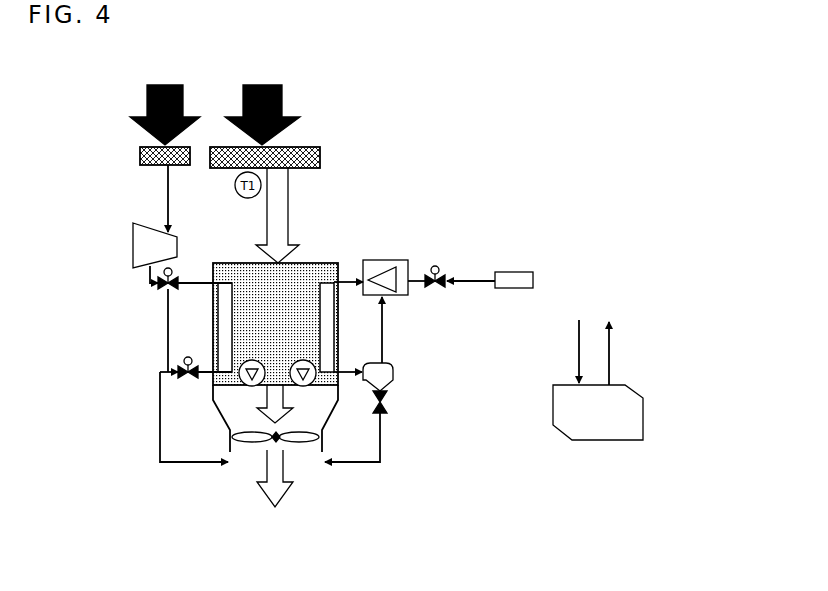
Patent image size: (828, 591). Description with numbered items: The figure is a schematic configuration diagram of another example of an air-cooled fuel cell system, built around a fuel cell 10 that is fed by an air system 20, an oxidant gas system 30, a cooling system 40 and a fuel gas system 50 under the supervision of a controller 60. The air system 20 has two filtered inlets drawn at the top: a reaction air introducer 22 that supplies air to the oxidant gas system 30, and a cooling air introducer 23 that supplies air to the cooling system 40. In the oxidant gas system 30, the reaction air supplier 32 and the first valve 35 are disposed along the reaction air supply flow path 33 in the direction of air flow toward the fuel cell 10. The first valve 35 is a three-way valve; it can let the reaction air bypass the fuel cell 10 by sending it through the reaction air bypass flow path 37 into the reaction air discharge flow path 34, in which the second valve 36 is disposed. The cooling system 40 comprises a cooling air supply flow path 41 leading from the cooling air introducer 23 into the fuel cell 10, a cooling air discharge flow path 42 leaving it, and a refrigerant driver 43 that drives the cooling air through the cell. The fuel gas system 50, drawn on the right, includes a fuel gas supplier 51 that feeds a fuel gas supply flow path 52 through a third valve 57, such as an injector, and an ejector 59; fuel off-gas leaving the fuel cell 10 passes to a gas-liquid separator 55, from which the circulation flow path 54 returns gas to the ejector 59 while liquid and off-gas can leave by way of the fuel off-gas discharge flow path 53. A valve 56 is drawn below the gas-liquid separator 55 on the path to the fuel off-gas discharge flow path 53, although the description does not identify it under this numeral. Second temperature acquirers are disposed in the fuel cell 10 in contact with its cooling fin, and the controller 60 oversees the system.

The fuel cell 10 is at (320, 262).
The air system 20 is at (209, 56).
The reaction air introducer 22 is at (140, 157).
The cooling air introducer 23 is at (292, 146).
The oxidant gas system 30 is at (128, 186).
The reaction air supplier 32 is at (133, 243).
The reaction air supply flow path 33 is at (157, 279).
The reaction air discharge flow path 34 is at (160, 405).
The first valve 35 is at (168, 288).
The second valve 36 is at (188, 366).
The reaction air bypass flow path 37 is at (168, 323).
The cooling system 40 is at (329, 186).
The cooling air supply flow path 41 is at (288, 233).
The cooling air discharge flow path 42 is at (268, 470).
The refrigerant driver 43 is at (258, 443).
The fuel gas system 50 is at (493, 261).
The fuel gas supplier 51 is at (533, 272).
The fuel gas supply flow path 52 is at (348, 275).
The fuel off-gas discharge flow path 53 is at (382, 450).
The circulation flow path 54 is at (384, 352).
The gas-liquid separator 55 is at (396, 373).
The drain valve 56 is at (387, 410).
The third valve 57 is at (432, 272).
The ejector 59 is at (403, 294).
The controller 60 is at (637, 397).